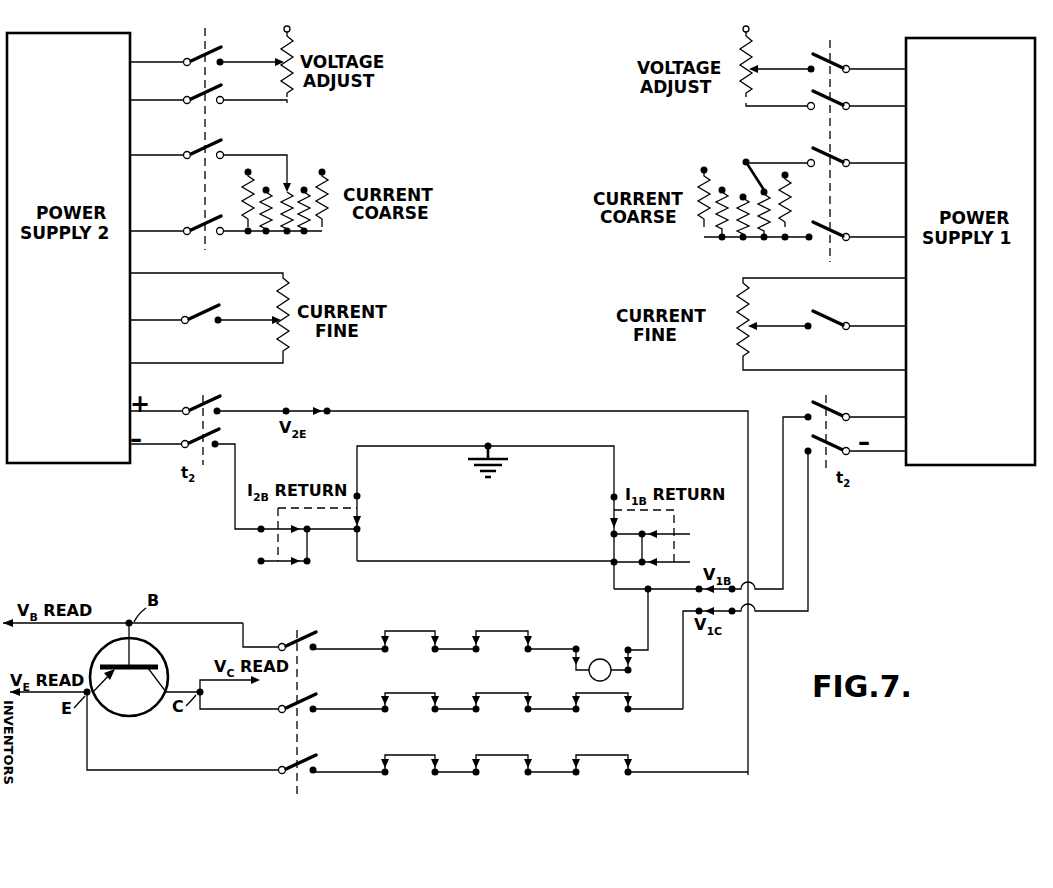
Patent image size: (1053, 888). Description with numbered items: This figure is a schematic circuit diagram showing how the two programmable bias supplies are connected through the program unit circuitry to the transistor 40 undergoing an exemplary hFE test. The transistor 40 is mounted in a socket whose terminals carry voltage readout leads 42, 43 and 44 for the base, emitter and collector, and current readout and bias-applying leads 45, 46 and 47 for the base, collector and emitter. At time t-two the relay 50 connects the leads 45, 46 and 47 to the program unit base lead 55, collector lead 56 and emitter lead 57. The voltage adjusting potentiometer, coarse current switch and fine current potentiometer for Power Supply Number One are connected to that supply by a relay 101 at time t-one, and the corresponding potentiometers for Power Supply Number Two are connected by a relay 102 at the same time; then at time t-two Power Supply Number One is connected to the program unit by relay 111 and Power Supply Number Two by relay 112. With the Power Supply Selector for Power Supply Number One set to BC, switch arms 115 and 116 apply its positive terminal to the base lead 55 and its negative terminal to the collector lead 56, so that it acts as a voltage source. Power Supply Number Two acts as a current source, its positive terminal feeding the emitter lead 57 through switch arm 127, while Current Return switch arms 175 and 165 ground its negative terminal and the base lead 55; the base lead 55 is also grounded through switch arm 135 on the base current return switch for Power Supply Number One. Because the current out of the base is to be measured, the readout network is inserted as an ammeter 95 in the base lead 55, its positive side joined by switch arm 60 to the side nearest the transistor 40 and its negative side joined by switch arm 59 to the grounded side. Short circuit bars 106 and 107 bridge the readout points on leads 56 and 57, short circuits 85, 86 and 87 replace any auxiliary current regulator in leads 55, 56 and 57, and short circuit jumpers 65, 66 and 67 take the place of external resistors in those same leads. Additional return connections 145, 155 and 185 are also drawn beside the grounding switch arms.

The transistor 40 is at (124, 717).
The base voltage readout lead 42 is at (104, 621).
The emitter voltage readout lead 43 is at (30, 696).
The collector voltage readout lead 44 is at (212, 688).
The base current readout and bias-applying lead 45 is at (226, 623).
The collector current readout and bias-applying lead 46 is at (207, 711).
The emitter current readout and bias-applying lead 47 is at (198, 771).
The relay 50 is at (308, 635).
The base lead 55 is at (480, 561).
The collector lead 56 is at (322, 711).
The emitter lead 57 is at (340, 774).
The Readout Selector switch arm 59 is at (632, 670).
The Readout Selector switch arm 60 is at (575, 666).
The short circuit jumper 65 is at (398, 632).
The short circuit jumper 66 is at (394, 693).
The short circuit jumper 67 is at (394, 755).
The short circuit 85 is at (497, 632).
The short circuit 86 is at (494, 693).
The short circuit 87 is at (491, 755).
The ammeter 95 is at (606, 660).
The relay 101 is at (826, 259).
The relay 102 is at (205, 250).
The short circuit bar 106 is at (620, 694).
The short circuit bar 107 is at (622, 756).
The relay 111 is at (838, 430).
The relay 112 is at (226, 411).
The switch arm 115 is at (722, 593).
The switch arm 116 is at (721, 614).
The switch arm 127 is at (301, 411).
The switch arm 135 is at (612, 512).
The I1B return connection 145 is at (685, 536).
The I1B return connection 155 is at (685, 564).
The switch arm 165 is at (362, 498).
The switch arm 175 is at (266, 533).
The I2B return connection 185 is at (266, 565).